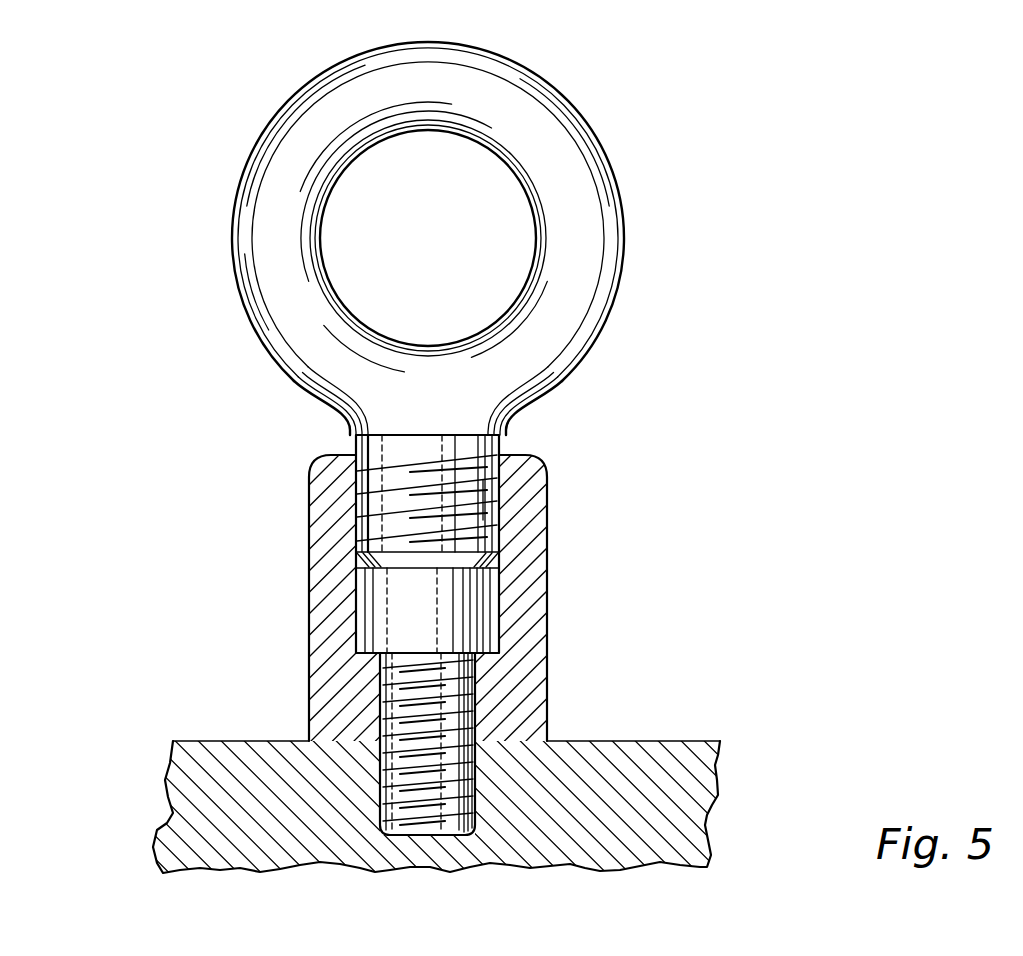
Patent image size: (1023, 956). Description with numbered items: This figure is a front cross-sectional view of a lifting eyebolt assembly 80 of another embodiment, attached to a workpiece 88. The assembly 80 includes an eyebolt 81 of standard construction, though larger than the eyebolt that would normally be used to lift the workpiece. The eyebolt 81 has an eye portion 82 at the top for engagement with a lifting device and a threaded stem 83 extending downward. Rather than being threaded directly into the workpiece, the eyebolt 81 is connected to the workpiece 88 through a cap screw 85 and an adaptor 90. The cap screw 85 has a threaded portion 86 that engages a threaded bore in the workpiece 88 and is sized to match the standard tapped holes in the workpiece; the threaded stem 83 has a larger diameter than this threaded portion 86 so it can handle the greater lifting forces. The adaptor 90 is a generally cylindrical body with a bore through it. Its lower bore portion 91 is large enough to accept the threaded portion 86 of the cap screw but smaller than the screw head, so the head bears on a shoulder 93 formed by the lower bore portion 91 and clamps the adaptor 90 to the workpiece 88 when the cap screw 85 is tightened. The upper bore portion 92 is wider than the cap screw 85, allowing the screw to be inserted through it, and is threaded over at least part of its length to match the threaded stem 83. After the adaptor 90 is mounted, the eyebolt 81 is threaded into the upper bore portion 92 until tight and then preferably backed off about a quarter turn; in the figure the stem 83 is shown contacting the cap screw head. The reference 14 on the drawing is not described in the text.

The lifting eyebolt assembly 80 is at (653, 393).
The eyebolt 81 is at (618, 188).
The eye portion 82 is at (620, 290).
The threaded stem 83 is at (500, 447).
The cap screw 85 is at (368, 603).
The stud 14 is at (382, 692).
The threaded portion 86 is at (323, 741).
The workpiece 88 is at (689, 740).
The adaptor 90 is at (548, 615).
The lower bore portion 91 is at (475, 710).
The upper bore portion 92 is at (494, 498).
The shoulder 93 is at (495, 655).